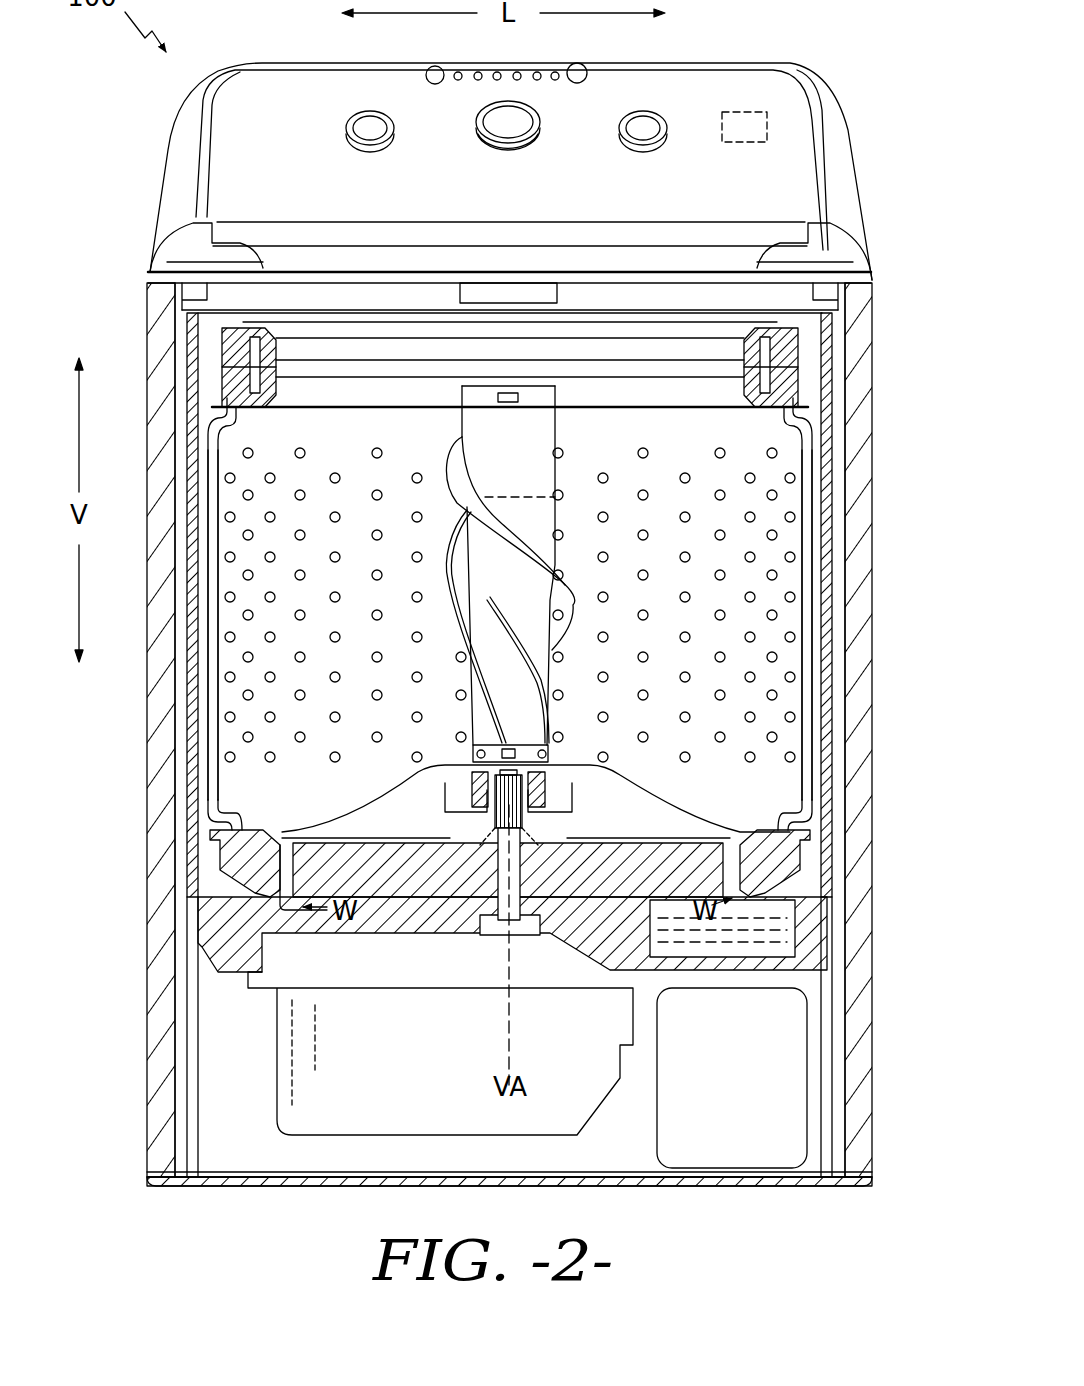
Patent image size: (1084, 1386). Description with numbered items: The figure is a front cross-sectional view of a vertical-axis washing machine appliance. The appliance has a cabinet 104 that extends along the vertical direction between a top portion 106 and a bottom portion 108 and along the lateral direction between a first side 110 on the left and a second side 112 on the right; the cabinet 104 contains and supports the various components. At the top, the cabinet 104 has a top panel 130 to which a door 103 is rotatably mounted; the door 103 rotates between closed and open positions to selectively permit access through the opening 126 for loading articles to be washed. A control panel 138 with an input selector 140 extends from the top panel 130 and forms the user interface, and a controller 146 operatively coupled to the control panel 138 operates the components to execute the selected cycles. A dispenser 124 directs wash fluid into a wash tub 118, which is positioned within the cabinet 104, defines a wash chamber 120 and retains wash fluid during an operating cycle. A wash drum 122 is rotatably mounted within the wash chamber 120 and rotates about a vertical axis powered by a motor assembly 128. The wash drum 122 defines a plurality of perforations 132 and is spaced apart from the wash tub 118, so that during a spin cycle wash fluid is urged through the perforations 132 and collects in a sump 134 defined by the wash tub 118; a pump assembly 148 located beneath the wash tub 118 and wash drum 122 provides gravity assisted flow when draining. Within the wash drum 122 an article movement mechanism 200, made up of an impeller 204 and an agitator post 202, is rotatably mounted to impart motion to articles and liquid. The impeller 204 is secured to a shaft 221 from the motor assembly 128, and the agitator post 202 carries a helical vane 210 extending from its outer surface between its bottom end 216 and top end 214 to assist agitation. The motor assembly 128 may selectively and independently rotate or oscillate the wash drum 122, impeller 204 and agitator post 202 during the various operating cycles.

The door 103 is at (768, 232).
The cabinet 104 is at (858, 528).
The top portion 106 is at (884, 275).
The bottom portion 108 is at (883, 1160).
The first side 110 is at (135, 988).
The second side 112 is at (883, 988).
The wash tub 118 is at (833, 592).
The wash chamber 120 is at (297, 675).
The wash drum 122 is at (240, 730).
The dispenser 124 is at (513, 272).
The opening 126 is at (297, 305).
The motor assembly 128 is at (377, 1072).
The top panel 130 is at (825, 245).
The perforations 132 is at (268, 765).
The sump 134 is at (778, 908).
The control panel 138 is at (640, 93).
The input selector 140 is at (495, 121).
The controller 146 is at (750, 110).
The pump assembly 148 is at (713, 1090).
The article movement mechanism 200 is at (470, 563).
The agitator post 202 is at (540, 475).
The impeller 204 is at (397, 818).
The helical vane 210 is at (455, 572).
The top end 214 is at (460, 390).
The bottom end 216 is at (562, 748).
The shaft 221 is at (510, 853).